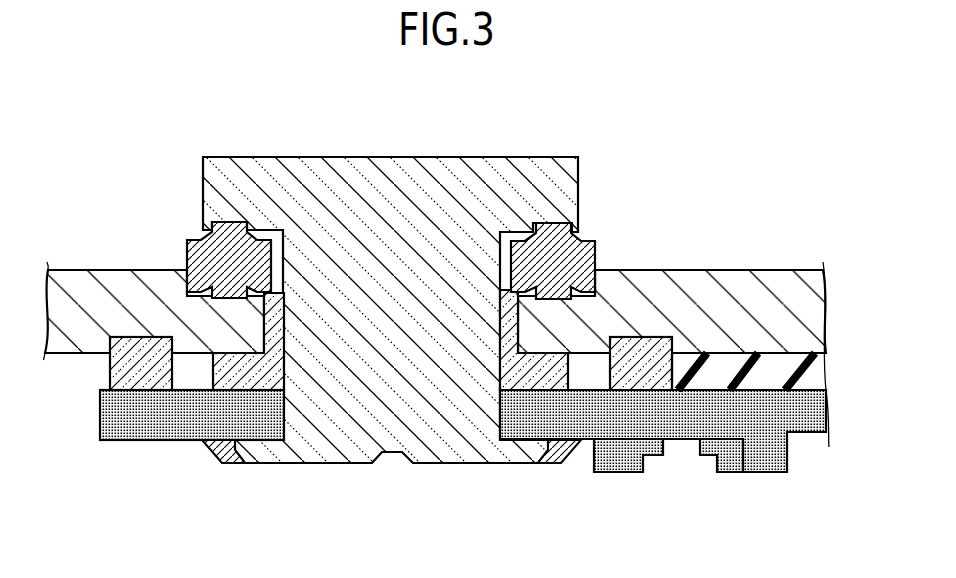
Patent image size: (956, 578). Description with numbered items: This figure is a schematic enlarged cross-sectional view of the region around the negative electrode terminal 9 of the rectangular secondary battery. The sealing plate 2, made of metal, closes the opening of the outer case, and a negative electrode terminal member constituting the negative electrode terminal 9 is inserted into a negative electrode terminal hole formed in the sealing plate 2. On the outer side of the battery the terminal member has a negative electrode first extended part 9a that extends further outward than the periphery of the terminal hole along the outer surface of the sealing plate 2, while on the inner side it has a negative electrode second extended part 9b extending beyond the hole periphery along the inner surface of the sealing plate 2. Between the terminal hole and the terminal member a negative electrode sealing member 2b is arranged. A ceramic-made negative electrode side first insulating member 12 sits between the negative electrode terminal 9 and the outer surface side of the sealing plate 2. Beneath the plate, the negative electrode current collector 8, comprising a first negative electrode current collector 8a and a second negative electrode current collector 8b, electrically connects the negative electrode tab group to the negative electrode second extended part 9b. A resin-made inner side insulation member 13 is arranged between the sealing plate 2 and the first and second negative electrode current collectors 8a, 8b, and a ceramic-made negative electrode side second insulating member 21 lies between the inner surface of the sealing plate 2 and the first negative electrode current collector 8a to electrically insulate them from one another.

The sealing plate 2 is at (690, 270).
The negative electrode sealing member 2b is at (264, 318).
The negative electrode current collector 8 is at (663, 474).
The first negative electrode current collector 8a is at (682, 440).
The second negative electrode current collector 8b is at (803, 432).
The negative electrode terminal 9 is at (400, 185).
The negative electrode first extended part 9a is at (243, 157).
The negative electrode second extended part 9b is at (260, 463).
The negative electrode side first insulating member 12 is at (590, 250).
The inner side insulation member 13 is at (793, 360).
The negative electrode side second insulating member 21 is at (118, 372).